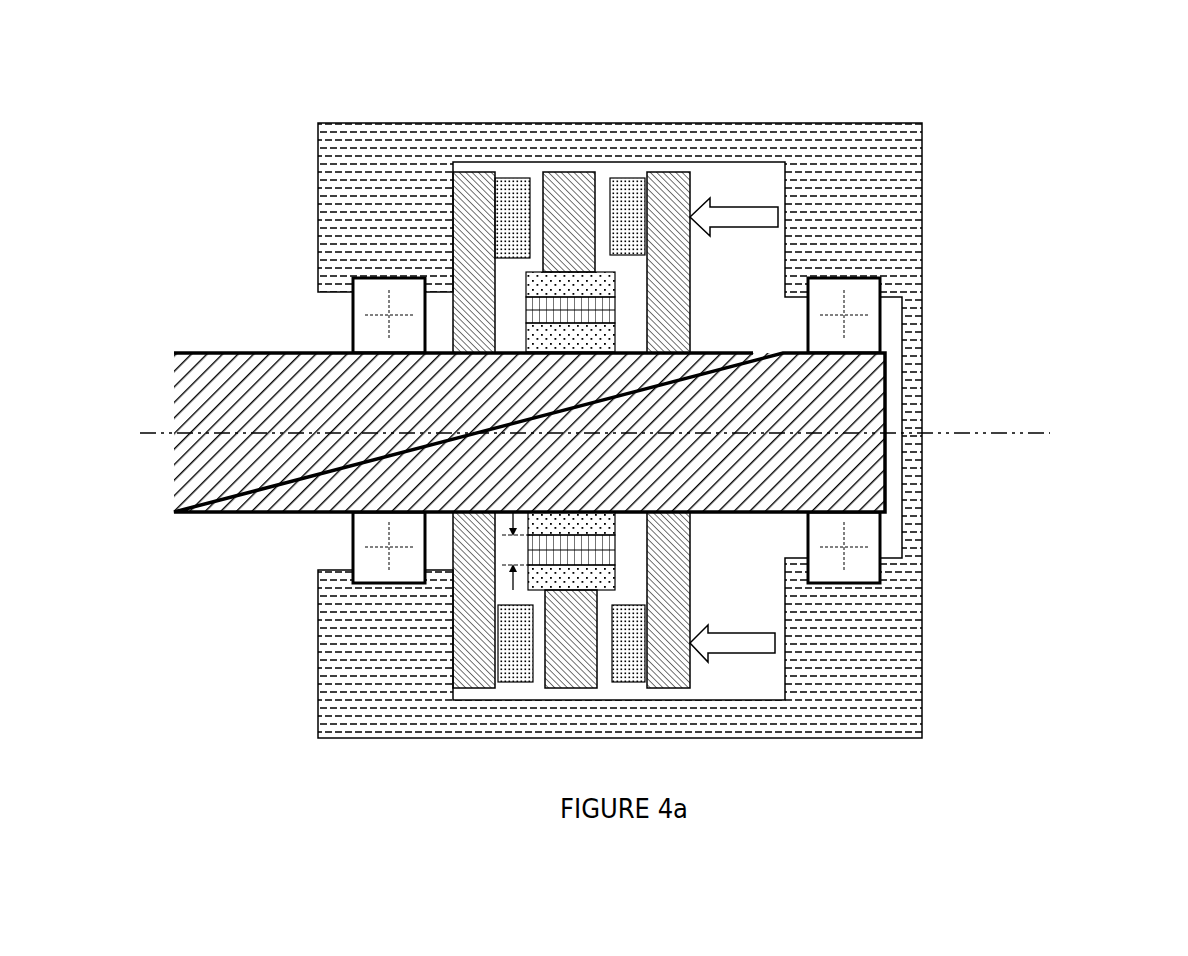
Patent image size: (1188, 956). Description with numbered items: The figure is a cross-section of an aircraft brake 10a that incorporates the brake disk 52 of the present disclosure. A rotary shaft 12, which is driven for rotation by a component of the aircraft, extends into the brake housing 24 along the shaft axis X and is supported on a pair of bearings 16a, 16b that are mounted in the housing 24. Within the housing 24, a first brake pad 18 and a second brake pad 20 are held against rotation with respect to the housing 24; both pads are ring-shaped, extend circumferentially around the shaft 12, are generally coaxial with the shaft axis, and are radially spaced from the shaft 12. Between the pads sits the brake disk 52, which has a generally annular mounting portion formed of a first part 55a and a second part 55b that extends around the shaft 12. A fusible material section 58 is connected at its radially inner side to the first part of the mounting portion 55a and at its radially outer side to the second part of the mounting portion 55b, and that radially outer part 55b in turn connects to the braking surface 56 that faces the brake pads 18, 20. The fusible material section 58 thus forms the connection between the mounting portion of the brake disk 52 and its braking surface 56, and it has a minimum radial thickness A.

The magnetic actuator assembly 10a is at (654, 417).
The rotary shaft 12 is at (305, 398).
The bearing 16a is at (370, 557).
The bearing 16b is at (842, 555).
The first brake pad 18 is at (472, 188).
The second brake pad 20 is at (675, 190).
The housing 24 is at (742, 647).
The brake disk 52 is at (569, 200).
The first part of the mounting portion 55a is at (587, 337).
The second part of the mounting portion 55b is at (585, 282).
The braking surface 56 is at (570, 228).
The fusible material section 58 is at (620, 565).
The minimum radial thickness A is at (508, 567).